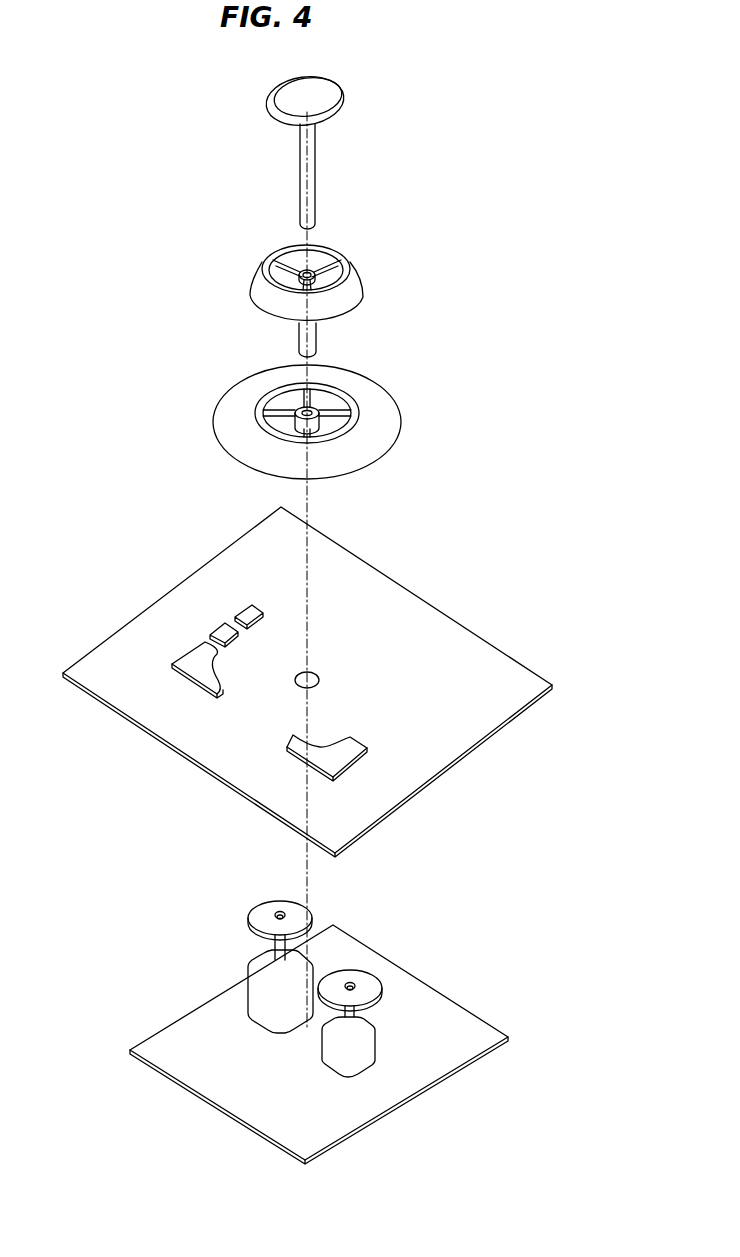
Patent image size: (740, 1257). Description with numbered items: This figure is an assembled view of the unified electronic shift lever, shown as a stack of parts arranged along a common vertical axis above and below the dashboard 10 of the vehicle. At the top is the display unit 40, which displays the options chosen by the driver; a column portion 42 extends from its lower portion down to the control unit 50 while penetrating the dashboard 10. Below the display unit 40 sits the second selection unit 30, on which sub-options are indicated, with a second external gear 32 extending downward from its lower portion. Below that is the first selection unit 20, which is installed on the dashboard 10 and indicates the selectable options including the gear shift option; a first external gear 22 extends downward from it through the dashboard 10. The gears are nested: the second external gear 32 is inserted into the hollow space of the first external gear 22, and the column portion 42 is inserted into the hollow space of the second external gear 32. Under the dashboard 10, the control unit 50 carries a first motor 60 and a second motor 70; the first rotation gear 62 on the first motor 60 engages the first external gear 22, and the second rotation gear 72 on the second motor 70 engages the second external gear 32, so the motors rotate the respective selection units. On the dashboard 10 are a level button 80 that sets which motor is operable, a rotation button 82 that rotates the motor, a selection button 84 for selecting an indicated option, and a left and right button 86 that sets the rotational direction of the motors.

The dashboard 10 is at (440, 625).
The first selection unit 20 is at (388, 408).
The first external gear 22 is at (290, 428).
The second selection unit 30 is at (350, 283).
The second external gear 32 is at (299, 340).
The display unit 40 is at (335, 93).
The column portion 42 is at (307, 178).
The control unit 50 is at (220, 1086).
The first motor 60 is at (262, 1000).
The first rotation gear 62 is at (260, 915).
The second motor 70 is at (368, 1047).
The second rotation gear 72 is at (367, 983).
The level button 80 is at (247, 612).
The rotation button 82 is at (200, 674).
The selection button 84 is at (347, 757).
The left and right button 86 is at (224, 633).